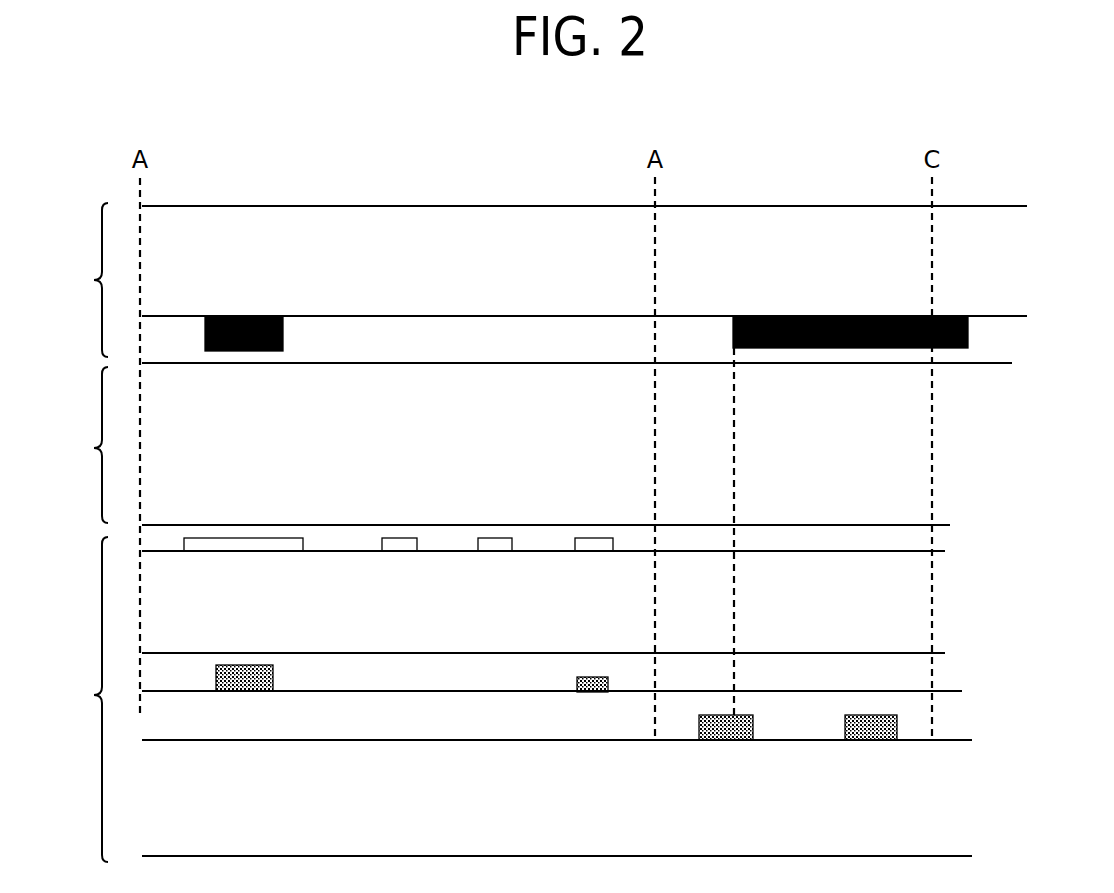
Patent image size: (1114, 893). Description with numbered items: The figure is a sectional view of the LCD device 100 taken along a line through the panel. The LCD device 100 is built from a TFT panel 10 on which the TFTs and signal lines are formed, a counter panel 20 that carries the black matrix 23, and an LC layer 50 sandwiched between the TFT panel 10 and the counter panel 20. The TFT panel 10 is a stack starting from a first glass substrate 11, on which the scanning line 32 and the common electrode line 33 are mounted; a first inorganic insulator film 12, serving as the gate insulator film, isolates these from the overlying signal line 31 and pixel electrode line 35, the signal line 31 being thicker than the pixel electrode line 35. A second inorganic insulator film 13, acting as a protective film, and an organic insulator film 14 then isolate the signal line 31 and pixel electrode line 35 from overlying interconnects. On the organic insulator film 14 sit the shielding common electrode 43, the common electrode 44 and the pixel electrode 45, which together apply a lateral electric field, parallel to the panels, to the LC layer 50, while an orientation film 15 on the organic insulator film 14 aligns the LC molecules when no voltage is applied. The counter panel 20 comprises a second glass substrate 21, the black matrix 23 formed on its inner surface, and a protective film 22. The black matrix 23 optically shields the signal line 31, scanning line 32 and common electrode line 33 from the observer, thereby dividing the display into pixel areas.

The LCD device 100 is at (1025, 168).
The TFT panel 10 is at (556, 639).
The first glass substrate 11 is at (948, 797).
The first inorganic insulator film 12 is at (948, 715).
The second inorganic insulator film 13 is at (938, 672).
The organic insulator film 14 is at (945, 613).
The orientation film 15 is at (950, 542).
The counter panel 20 is at (565, 283).
The second glass substrate 21 is at (985, 258).
The protective film 22 is at (985, 336).
The black matrix 23 is at (254, 316).
The signal line 31 is at (243, 665).
The scanning line 32 is at (858, 742).
The common electrode line 33 is at (716, 742).
The pixel electrode line 35 is at (588, 692).
The shielding common electrode 43 is at (233, 538).
The common electrode 44 is at (490, 552).
The pixel electrode 45 is at (393, 538).
The LC layer 50 is at (79, 445).